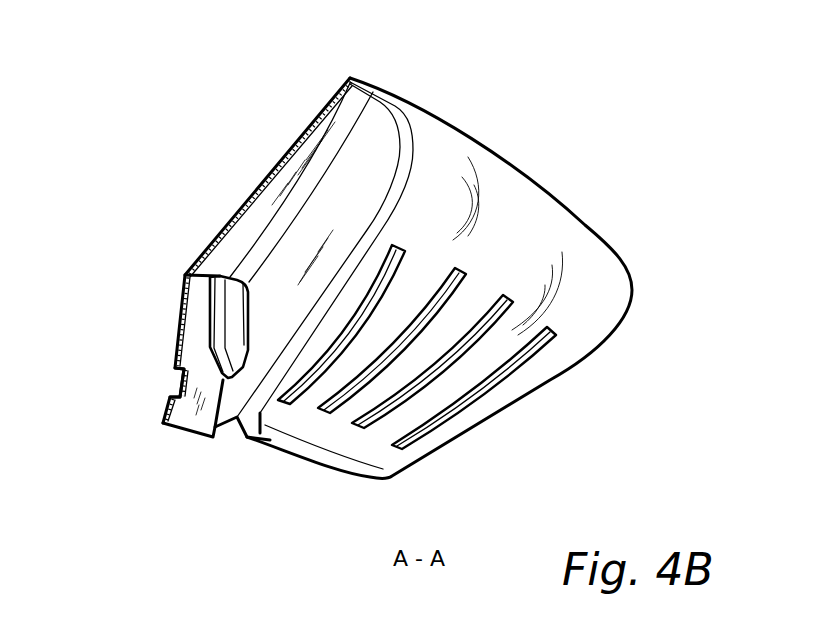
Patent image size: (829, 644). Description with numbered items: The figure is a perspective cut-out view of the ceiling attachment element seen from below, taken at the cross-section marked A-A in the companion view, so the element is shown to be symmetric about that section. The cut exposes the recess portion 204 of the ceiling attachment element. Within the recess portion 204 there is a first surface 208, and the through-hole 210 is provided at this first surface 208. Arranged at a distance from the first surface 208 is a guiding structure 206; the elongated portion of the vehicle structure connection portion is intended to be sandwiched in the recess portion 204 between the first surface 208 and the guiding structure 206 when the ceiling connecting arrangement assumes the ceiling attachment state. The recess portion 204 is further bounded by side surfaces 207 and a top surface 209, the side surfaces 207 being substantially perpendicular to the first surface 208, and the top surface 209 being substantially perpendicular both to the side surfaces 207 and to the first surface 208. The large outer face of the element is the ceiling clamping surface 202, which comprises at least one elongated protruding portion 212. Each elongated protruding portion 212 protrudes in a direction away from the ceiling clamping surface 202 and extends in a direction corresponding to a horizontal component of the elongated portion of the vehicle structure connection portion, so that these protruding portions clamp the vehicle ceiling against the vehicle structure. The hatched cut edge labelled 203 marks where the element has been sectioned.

The ceiling clamping surface 202 is at (494, 343).
The section cut wall edge 203 is at (234, 219).
The recess portion 204 is at (187, 420).
The guiding structure 206 is at (235, 347).
The side surfaces 207 is at (362, 193).
The first surface 208 is at (197, 340).
The top surface 209 is at (286, 177).
The through-hole 210 is at (175, 380).
The elongated protruding portion 212 is at (495, 383).